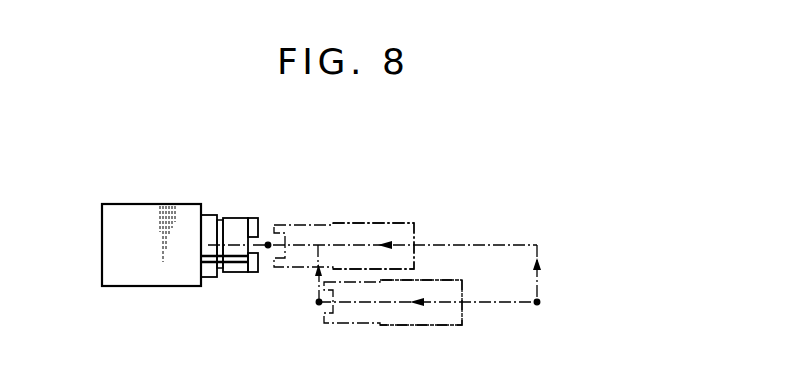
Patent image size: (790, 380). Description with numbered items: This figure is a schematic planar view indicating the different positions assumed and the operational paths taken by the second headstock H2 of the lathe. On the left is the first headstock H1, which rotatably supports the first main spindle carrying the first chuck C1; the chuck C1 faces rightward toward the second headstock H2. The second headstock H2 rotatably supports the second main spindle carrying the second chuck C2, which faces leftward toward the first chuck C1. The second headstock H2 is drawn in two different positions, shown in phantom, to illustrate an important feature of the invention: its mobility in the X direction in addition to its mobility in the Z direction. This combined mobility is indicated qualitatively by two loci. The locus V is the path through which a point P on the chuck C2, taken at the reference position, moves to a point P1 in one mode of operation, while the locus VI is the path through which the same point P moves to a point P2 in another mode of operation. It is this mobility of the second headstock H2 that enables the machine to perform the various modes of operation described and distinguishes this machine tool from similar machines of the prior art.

The first headstock H1 is at (118, 246).
The first chuck C1 is at (237, 216).
The second chuck C2 is at (308, 224).
The second headstock H2 is at (378, 218).
The locus V is at (482, 243).
The locus VI is at (508, 304).
The point P is at (541, 302).
The point P1 is at (268, 249).
The point P2 is at (318, 302).